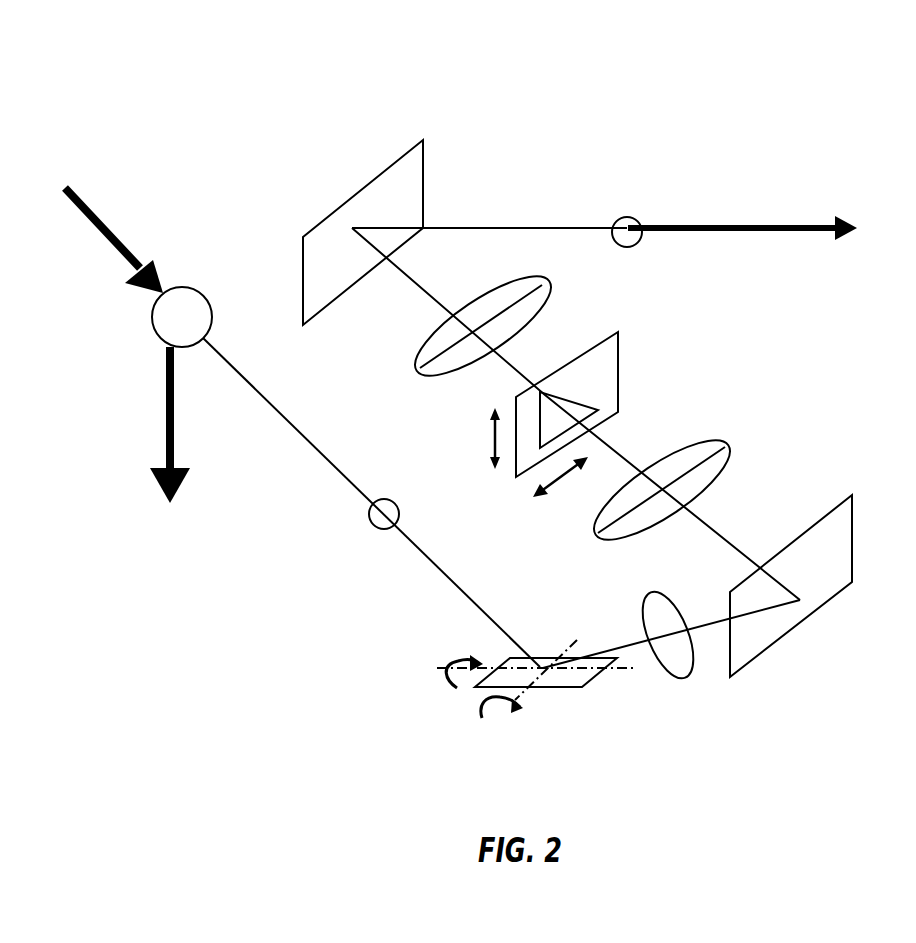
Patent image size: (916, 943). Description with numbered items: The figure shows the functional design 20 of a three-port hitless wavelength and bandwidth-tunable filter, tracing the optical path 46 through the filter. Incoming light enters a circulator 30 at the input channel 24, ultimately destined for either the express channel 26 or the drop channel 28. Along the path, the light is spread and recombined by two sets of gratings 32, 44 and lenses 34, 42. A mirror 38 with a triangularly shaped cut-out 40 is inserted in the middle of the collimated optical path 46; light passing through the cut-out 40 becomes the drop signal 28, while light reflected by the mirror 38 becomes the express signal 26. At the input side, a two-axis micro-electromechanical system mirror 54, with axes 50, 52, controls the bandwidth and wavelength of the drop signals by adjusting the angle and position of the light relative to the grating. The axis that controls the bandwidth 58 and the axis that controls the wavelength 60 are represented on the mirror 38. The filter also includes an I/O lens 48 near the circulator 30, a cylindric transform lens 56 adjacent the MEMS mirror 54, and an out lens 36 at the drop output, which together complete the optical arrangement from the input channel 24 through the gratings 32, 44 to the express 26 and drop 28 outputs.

The functional design 20 is at (278, 100).
The input channel 24 is at (92, 208).
The express channel 26 is at (167, 423).
The drop channel 28 is at (845, 225).
The circulator 30 is at (192, 290).
The grating 32 is at (423, 180).
The lens 34 is at (552, 307).
The out lens 36 is at (628, 218).
The mirror 38 is at (618, 332).
The triangularly shaped cut-out 40 is at (570, 398).
The lens 42 is at (717, 437).
The grating 44 is at (852, 495).
The optical path 46 is at (302, 430).
The I/O lens 48 is at (375, 528).
The axis 50 is at (438, 668).
The axis 52 is at (507, 703).
The two-axis MEMS mirror 54 is at (582, 688).
The cylindric transform lens 56 is at (683, 680).
The bandwidth axis 58 is at (492, 438).
The wavelength axis 60 is at (547, 490).